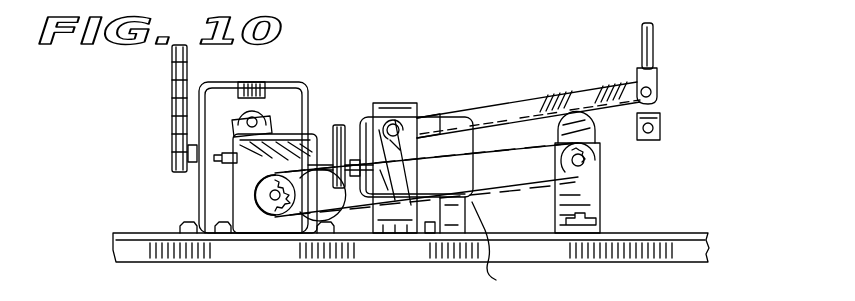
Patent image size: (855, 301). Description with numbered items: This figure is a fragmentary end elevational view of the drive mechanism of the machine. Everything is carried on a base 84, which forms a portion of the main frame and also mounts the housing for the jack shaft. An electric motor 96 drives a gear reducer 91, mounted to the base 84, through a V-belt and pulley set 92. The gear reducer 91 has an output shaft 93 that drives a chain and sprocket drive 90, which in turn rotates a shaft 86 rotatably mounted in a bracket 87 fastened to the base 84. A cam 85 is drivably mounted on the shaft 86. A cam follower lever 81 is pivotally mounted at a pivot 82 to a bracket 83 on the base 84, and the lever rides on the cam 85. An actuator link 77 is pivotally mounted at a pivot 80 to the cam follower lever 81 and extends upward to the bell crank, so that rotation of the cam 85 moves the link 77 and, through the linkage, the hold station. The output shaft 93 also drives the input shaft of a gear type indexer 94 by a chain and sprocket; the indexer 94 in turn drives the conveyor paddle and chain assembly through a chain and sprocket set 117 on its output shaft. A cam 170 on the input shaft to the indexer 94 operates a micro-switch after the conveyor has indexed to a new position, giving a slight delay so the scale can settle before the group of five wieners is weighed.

The actuator link 77 is at (655, 44).
The pivotal mounting 80 is at (659, 92).
The cam follower lever 81 is at (517, 104).
The pivot 82 is at (396, 124).
The bracket 83 is at (382, 103).
The base 84 is at (683, 233).
The cam 85 is at (598, 128).
The shaft 86 is at (582, 168).
The bracket 87 is at (565, 212).
The chain and sprocket drive 90 is at (531, 176).
The gear reducer 91 is at (302, 100).
The V-belt and pulley set 92 is at (340, 125).
The output shaft 93 is at (270, 195).
The gear type indexer 94 is at (262, 56).
The electric motor 96 is at (440, 205).
The chain and sprocket set 117 is at (172, 110).
The cam 170 is at (242, 106).